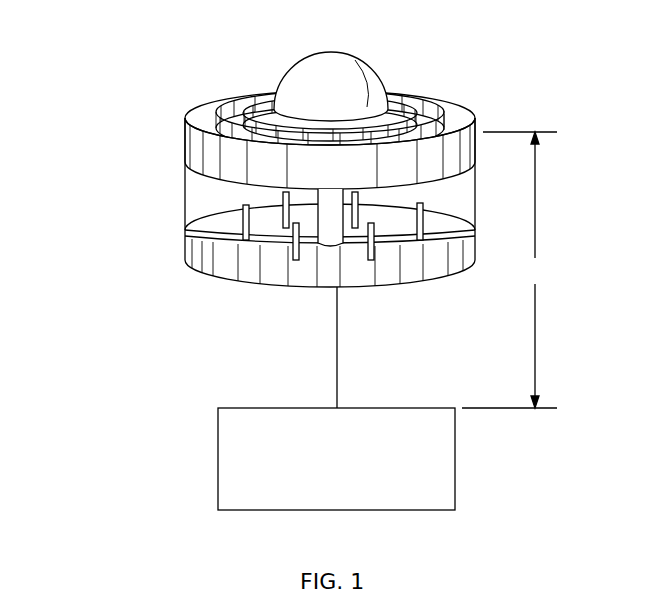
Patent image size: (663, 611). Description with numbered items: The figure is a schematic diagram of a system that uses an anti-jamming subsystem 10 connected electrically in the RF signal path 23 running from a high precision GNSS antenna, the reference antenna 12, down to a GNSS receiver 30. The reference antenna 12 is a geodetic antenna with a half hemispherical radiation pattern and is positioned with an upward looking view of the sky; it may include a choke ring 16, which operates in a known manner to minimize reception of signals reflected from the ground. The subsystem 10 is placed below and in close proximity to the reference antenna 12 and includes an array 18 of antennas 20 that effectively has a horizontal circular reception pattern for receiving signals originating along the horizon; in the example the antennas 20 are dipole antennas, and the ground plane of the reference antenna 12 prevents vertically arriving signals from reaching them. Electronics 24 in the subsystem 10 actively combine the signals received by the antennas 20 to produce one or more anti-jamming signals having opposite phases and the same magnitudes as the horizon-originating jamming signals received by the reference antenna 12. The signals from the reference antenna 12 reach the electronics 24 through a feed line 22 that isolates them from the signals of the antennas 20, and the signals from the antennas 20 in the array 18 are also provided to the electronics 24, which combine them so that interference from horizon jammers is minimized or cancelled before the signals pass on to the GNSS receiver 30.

The anti-jamming subsystem 10 is at (282, 206).
The reference antenna 12 is at (365, 50).
The choke ring 16 is at (478, 119).
The array 18 is at (217, 252).
The antennas 20 is at (243, 217).
The feed line 22 is at (327, 237).
The RF signal path 23 is at (548, 281).
The electronics 24 is at (348, 284).
The GNSS receiver 30 is at (347, 496).